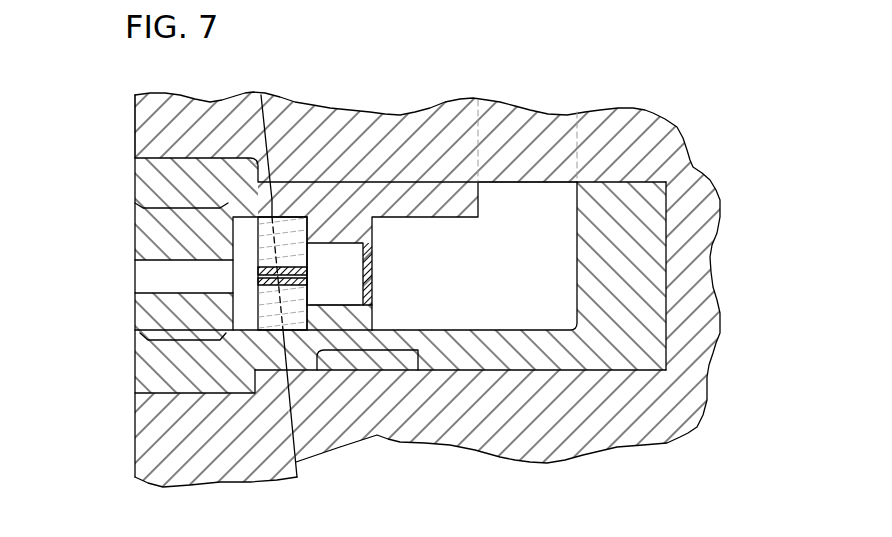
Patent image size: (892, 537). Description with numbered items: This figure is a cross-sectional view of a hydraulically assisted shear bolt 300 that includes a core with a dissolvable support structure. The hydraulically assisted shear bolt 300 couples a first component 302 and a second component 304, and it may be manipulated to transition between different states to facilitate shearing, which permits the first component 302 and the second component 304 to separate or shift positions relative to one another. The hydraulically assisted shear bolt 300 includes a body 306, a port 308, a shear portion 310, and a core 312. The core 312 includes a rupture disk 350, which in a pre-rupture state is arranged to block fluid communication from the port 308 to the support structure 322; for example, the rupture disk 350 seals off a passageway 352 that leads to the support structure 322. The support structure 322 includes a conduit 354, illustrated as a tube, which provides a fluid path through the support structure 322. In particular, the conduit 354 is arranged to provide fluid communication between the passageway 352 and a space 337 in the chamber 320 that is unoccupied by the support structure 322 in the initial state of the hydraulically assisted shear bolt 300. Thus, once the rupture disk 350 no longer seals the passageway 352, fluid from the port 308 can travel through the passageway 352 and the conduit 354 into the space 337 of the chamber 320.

The hydraulically assisted shear bolt 300 is at (608, 68).
The first component 302 is at (377, 435).
The second component 304 is at (253, 480).
The body 306 is at (577, 370).
The port 308 is at (553, 183).
The shear portion 310 is at (273, 200).
The core 312 is at (600, 268).
The chamber 320 is at (250, 217).
The support structure 322 is at (303, 217).
The space 337 is at (247, 310).
The rupture disk 350 is at (378, 262).
The passageway 352 is at (332, 278).
The conduit 354 is at (263, 267).